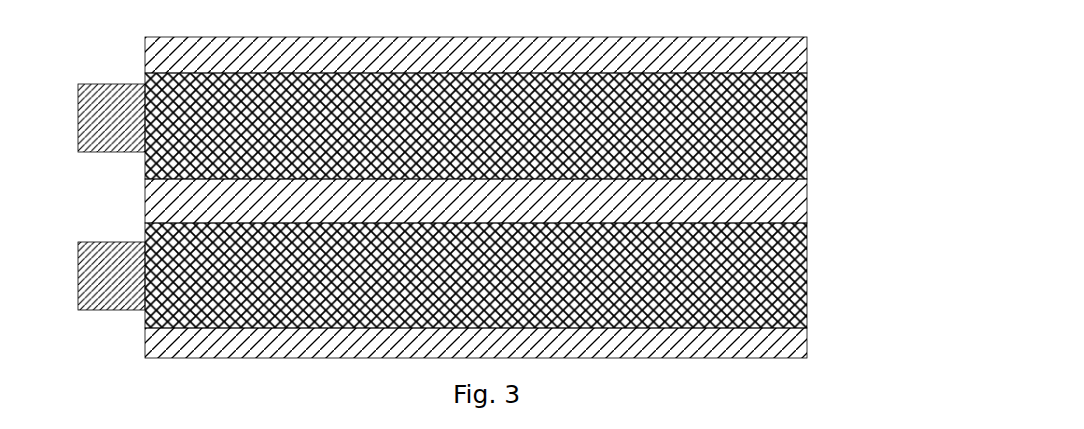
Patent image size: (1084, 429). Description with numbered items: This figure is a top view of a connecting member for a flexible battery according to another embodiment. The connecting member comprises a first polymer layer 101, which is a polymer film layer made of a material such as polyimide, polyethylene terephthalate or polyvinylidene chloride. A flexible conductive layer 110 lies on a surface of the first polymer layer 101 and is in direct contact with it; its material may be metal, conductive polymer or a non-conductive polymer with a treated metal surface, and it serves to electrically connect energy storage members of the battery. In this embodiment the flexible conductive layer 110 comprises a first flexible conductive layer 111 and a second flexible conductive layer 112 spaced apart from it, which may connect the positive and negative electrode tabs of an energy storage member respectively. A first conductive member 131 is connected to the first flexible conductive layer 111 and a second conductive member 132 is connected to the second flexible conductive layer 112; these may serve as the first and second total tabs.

The first polymer layer 101 is at (807, 337).
The flexible conductive layer 110 is at (555, 200).
The first flexible conductive layer 111 is at (807, 153).
The second flexible conductive layer 112 is at (525, 275).
The first conductive member 131 is at (108, 84).
The second conductive member 132 is at (108, 242).